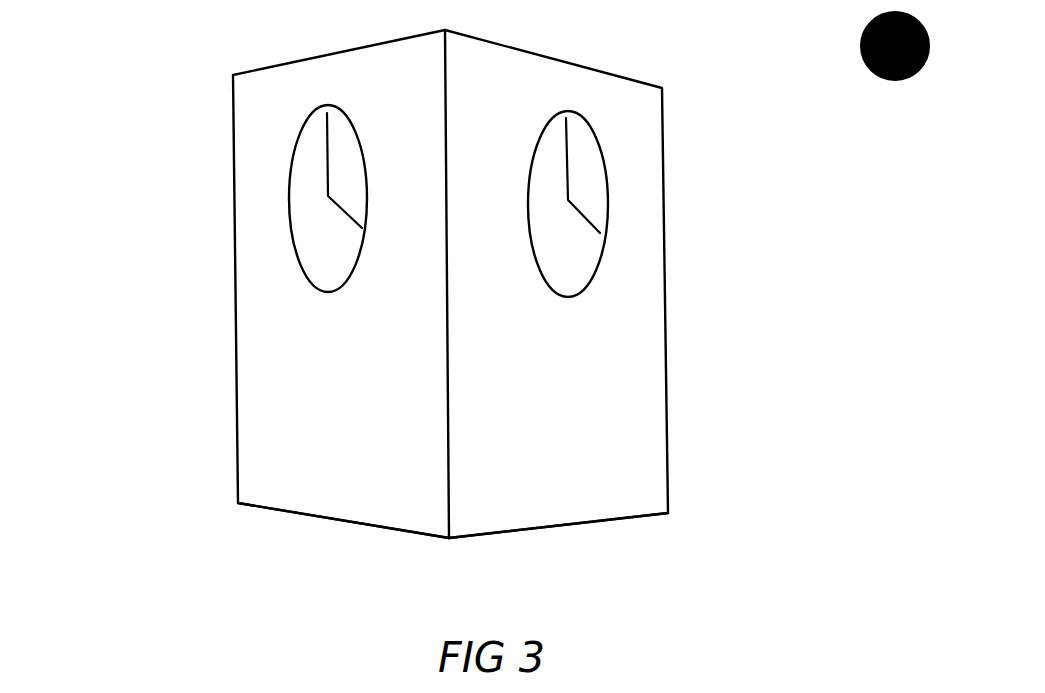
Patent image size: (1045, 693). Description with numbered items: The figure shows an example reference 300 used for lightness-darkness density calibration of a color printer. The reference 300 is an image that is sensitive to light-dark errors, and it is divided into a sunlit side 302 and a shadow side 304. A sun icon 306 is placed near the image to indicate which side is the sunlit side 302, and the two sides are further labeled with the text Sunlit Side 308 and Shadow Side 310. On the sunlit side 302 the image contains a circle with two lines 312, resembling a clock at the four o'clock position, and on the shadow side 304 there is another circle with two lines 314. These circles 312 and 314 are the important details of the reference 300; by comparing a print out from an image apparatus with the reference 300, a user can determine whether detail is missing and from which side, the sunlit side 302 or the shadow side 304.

The reference 300 is at (143, 272).
The sunlit side 302 is at (628, 527).
The shadow side 304 is at (343, 525).
The sun icon 306 is at (889, 90).
The Sunlit Side label 308 is at (617, 415).
The Shadow Side label 310 is at (292, 408).
The circle with two lines 312 is at (618, 260).
The circle with two lines 314 is at (297, 173).